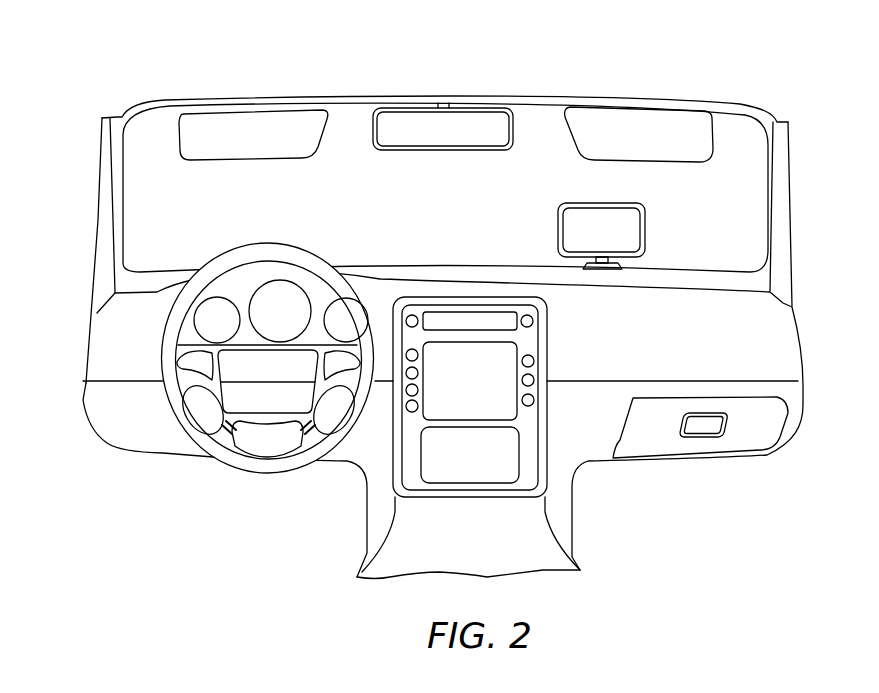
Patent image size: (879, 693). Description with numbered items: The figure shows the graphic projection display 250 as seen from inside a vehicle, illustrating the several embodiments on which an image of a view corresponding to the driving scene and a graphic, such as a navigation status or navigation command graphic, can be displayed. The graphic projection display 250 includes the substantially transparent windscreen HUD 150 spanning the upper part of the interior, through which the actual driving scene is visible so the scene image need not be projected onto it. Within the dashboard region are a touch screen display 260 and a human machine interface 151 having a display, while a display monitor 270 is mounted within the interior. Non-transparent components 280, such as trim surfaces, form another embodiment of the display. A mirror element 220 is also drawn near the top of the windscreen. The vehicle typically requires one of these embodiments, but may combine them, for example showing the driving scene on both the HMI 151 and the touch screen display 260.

The graphic projection display 250 is at (158, 99).
The substantially transparent windscreen HUD 150 is at (161, 159).
The non-transparent components 280 is at (247, 139).
The rearview mirror 220 is at (460, 139).
The display monitor 270 is at (647, 215).
The human machine interface (HMI) 151 is at (515, 353).
The touch screen display 260 is at (518, 440).